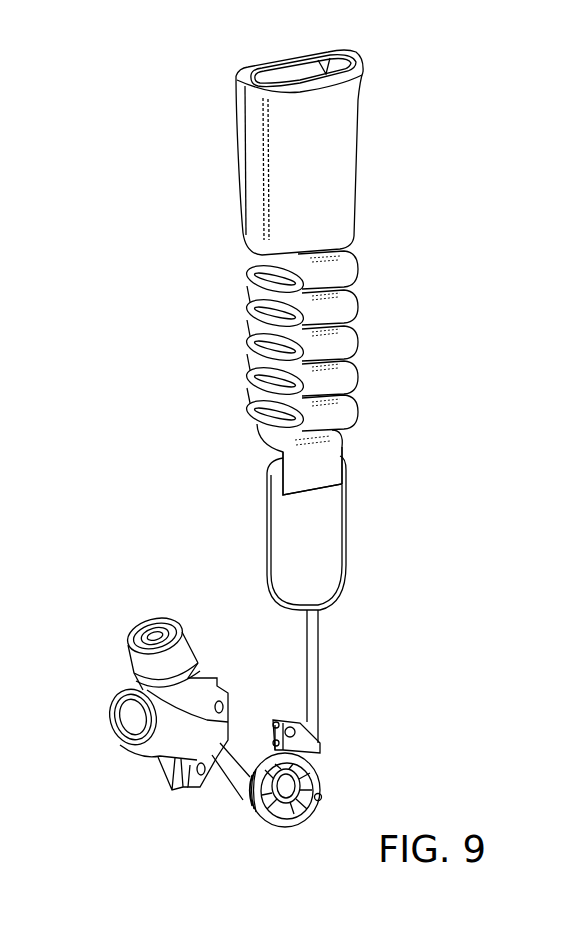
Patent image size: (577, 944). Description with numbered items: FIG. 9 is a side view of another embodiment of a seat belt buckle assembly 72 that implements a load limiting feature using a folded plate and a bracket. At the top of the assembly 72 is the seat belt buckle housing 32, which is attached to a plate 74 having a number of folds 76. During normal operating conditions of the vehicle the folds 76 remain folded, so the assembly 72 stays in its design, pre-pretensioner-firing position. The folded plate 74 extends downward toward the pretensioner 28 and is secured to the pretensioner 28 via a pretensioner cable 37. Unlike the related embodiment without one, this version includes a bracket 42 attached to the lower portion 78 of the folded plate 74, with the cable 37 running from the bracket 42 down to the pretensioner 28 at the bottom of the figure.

The seat belt buckle assembly 72 is at (194, 74).
The seat belt buckle housing 32 is at (363, 170).
The plate 74 is at (362, 348).
The folds 76 is at (246, 318).
The lower portion 78 is at (318, 473).
The bracket 42 is at (345, 583).
The pretensioner cable 37 is at (320, 640).
The pretensioner 28 is at (200, 663).